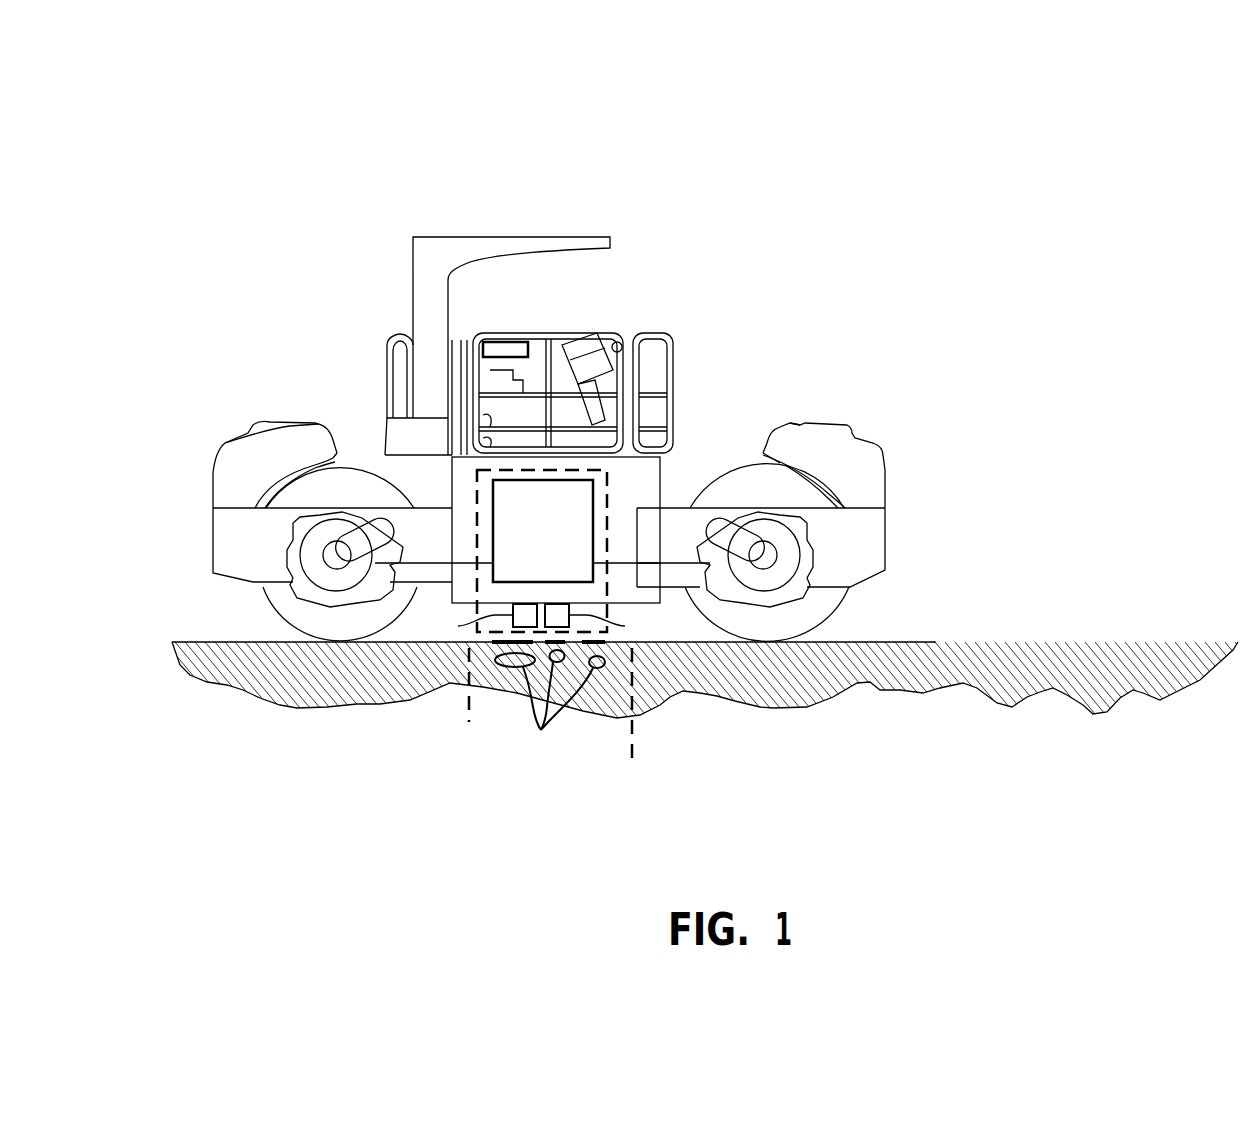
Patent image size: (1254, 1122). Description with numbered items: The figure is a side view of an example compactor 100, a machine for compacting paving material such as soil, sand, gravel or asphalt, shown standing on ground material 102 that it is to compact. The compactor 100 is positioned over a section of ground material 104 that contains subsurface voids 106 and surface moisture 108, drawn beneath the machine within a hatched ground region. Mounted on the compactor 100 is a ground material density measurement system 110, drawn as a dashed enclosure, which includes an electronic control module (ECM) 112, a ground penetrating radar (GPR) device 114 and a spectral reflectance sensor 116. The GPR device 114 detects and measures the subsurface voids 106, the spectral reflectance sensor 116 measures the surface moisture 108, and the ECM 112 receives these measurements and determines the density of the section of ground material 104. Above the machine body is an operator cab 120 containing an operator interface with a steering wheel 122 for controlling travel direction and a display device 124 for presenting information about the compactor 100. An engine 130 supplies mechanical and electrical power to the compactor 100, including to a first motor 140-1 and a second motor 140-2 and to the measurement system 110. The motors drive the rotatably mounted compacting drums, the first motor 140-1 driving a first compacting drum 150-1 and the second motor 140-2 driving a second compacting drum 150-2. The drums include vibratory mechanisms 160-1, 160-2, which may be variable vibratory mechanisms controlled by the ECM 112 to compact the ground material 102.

The compactor 100 is at (218, 50).
The ground material 102 is at (952, 668).
The section of ground material 104 is at (604, 526).
The subsurface voids 106 is at (550, 710).
The surface moisture 108 is at (497, 645).
The ground material density measurement system 110 is at (607, 470).
The electronic control module (ECM) 112 is at (543, 531).
The ground penetrating radar (GPR) device 114 is at (474, 619).
The spectral reflectance sensor 116 is at (609, 619).
The operator cab 120 is at (413, 283).
The steering wheel 122 is at (582, 332).
The display device 124 is at (507, 343).
The engine 130 is at (625, 517).
The first motor 140-1 is at (763, 560).
The second motor 140-2 is at (337, 560).
The first compacting drum 150-1 is at (742, 473).
The second compacting drum 150-2 is at (348, 473).
The first vibratory mechanism 160-1 is at (785, 580).
The second vibratory mechanism 160-2 is at (365, 580).